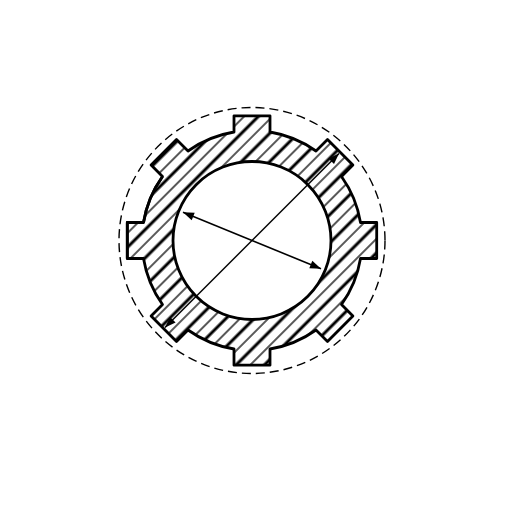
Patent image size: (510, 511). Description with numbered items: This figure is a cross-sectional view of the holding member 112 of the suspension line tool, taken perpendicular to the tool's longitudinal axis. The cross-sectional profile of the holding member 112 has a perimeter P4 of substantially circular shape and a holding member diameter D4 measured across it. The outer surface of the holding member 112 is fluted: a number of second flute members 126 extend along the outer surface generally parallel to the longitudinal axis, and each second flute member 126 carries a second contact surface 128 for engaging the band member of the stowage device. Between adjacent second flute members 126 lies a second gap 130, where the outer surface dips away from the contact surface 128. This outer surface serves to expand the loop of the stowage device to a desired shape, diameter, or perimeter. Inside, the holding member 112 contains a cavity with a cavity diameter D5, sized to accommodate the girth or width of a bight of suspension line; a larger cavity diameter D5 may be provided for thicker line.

The holding member 112 is at (181, 88).
The second flute member 126 is at (130, 222).
The second contact surface 128 is at (125, 234).
The second gap 130 is at (147, 193).
The perimeter P4 is at (298, 114).
The holding member diameter D4 is at (297, 195).
The cavity diameter D5 is at (293, 257).